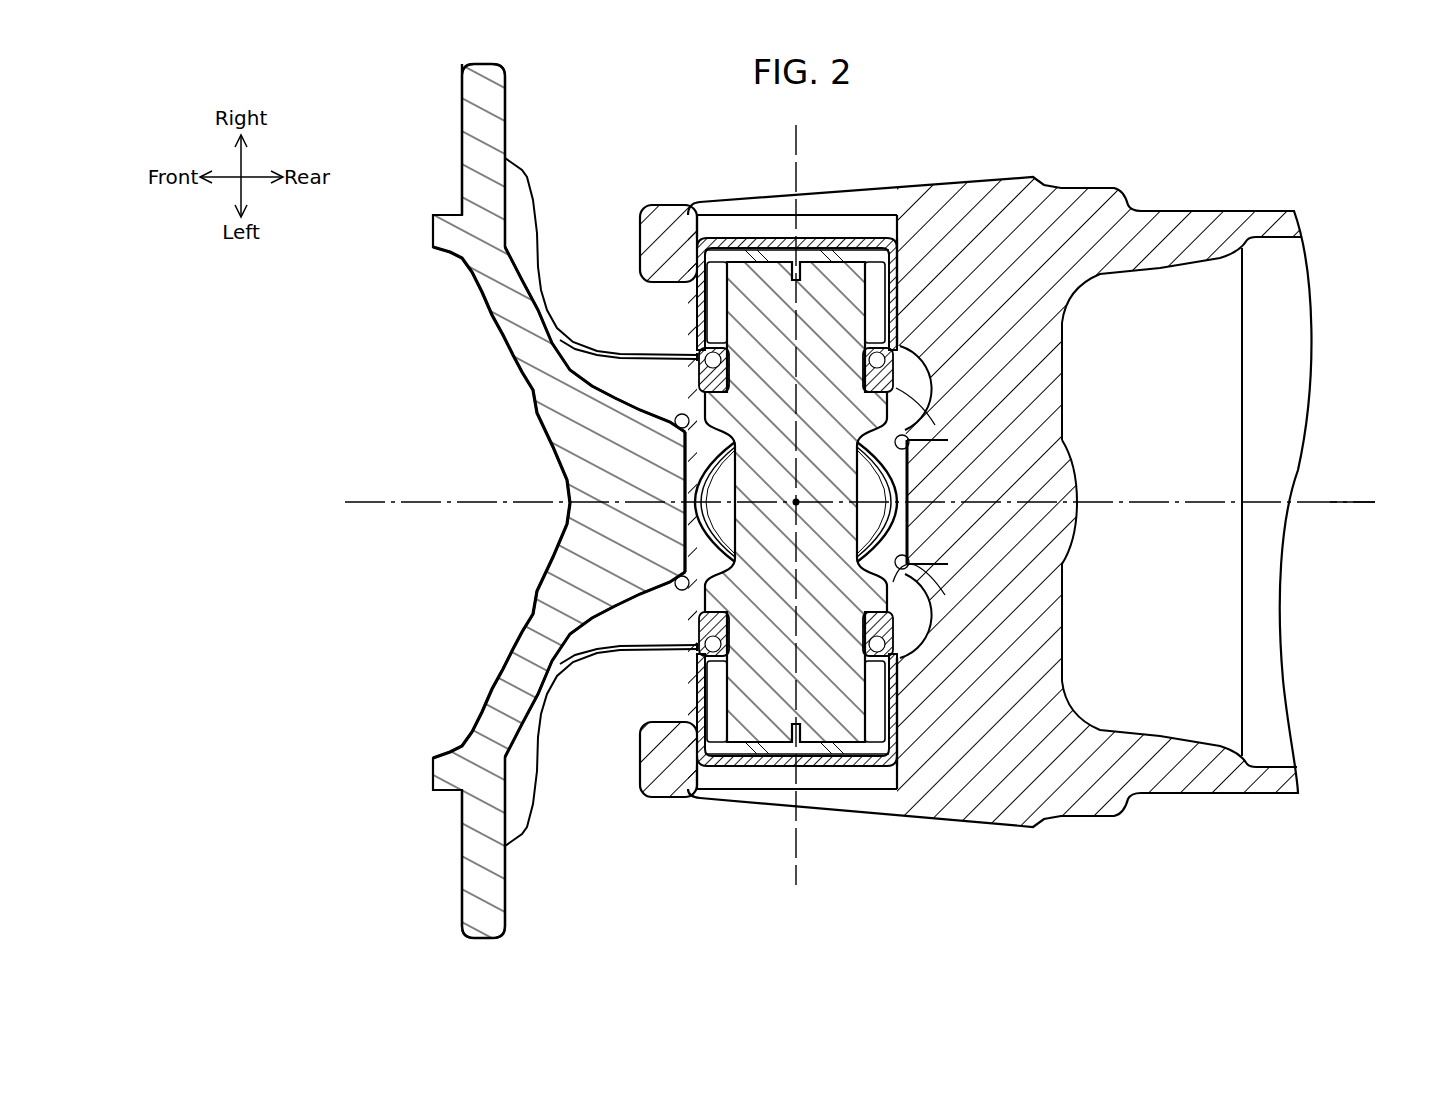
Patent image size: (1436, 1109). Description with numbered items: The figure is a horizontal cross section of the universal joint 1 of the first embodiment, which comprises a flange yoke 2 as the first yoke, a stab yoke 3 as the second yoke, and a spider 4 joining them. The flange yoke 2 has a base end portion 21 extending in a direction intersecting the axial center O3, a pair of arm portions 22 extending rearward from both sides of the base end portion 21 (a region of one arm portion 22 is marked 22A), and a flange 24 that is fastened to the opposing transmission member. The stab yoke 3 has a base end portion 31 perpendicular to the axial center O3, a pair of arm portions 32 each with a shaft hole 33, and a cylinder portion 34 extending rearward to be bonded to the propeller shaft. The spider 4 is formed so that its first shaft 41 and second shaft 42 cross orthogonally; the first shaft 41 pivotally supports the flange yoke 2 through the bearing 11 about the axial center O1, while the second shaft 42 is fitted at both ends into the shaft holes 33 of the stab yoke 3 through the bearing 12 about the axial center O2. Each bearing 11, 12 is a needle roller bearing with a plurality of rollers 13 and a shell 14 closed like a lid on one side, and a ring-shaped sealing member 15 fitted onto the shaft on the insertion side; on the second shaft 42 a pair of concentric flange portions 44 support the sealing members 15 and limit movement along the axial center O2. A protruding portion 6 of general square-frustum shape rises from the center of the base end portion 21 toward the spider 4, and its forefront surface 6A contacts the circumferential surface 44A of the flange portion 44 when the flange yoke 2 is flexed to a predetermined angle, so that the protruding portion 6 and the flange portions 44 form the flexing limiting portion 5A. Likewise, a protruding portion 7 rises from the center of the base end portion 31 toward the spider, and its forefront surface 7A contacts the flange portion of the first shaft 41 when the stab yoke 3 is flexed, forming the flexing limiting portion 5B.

The universal joint 1 is at (1115, 127).
The flange yoke 2 is at (424, 320).
The stab yoke 3 is at (1096, 832).
The spider 4 is at (685, 697).
The flexing limiting portion 5A is at (662, 402).
The flexing limiting portion 5B is at (905, 595).
The protruding portion 6 is at (655, 470).
The forefront surface 6A is at (587, 444).
The protruding portion 7 is at (917, 467).
The forefront surface 7A is at (920, 440).
The bearing 11 is at (686, 547).
The bearing 12 is at (847, 228).
The rollers 13 is at (733, 287).
The shell 14 is at (763, 253).
The sealing member 15 is at (890, 376).
The base end portion 21 is at (537, 630).
The arm portions 22 is at (643, 380).
The cover tip 22A is at (633, 353).
The flange 24 is at (495, 96).
The base end portion 31 is at (1003, 700).
The arm portions 32 is at (660, 230).
The shaft hole 33 is at (903, 215).
The cylinder portion 34 is at (1213, 787).
The first shaft 41 is at (909, 546).
The second shaft 42 is at (823, 697).
The flange portions 44 is at (933, 420).
The circumferential surface 44A is at (700, 400).
The axial center O1 is at (814, 487).
The axial center O2 is at (796, 521).
The axial center O3 is at (1377, 501).